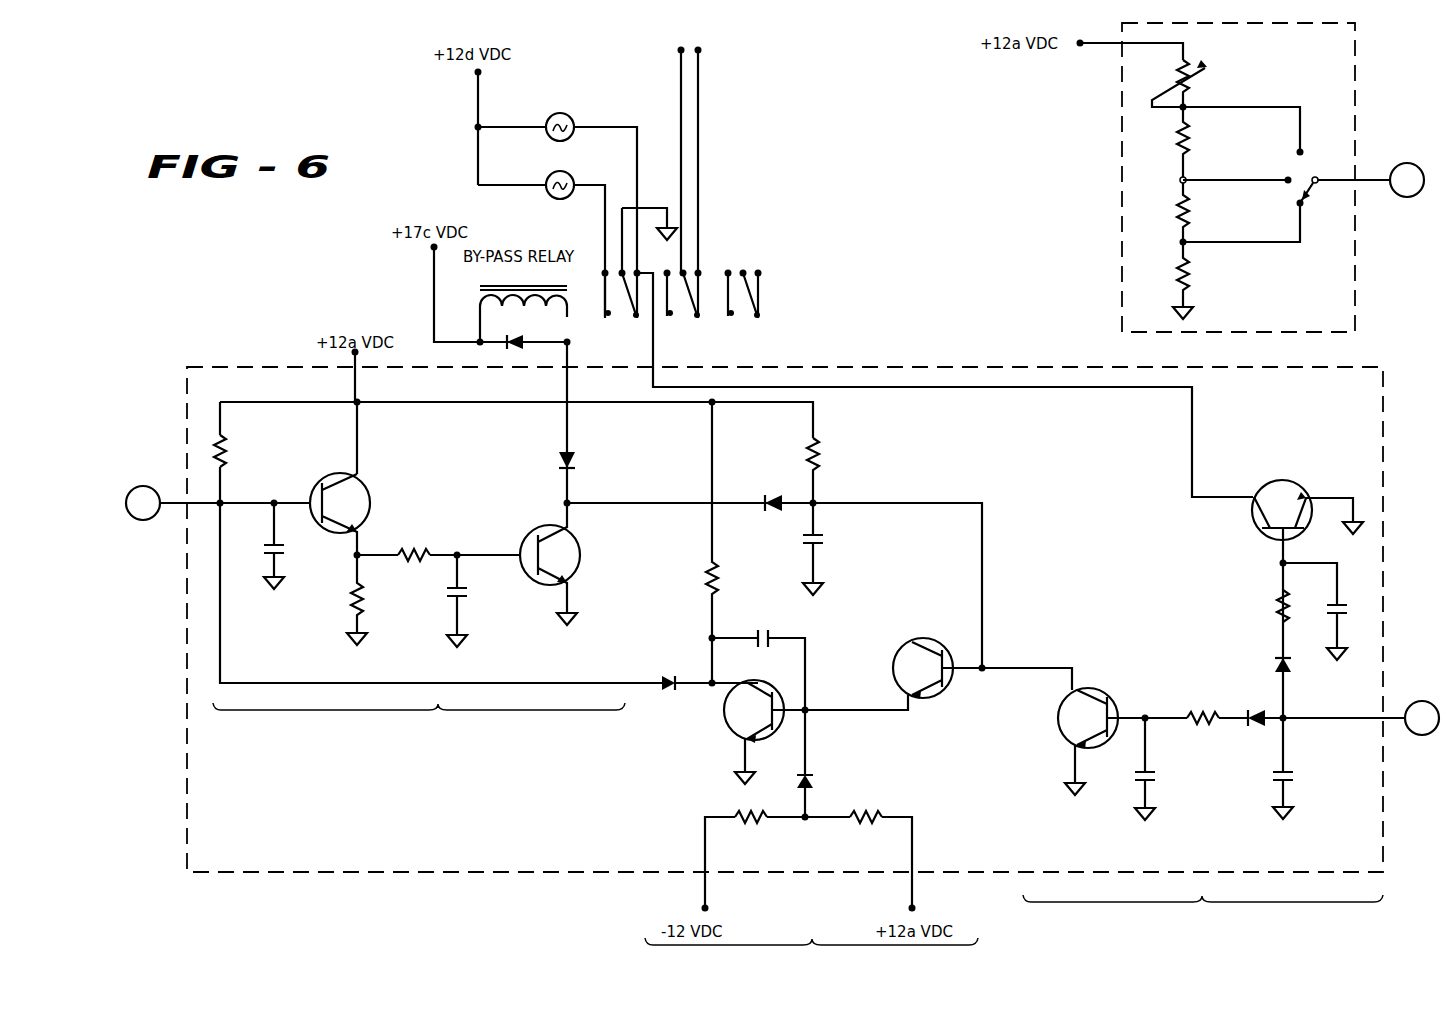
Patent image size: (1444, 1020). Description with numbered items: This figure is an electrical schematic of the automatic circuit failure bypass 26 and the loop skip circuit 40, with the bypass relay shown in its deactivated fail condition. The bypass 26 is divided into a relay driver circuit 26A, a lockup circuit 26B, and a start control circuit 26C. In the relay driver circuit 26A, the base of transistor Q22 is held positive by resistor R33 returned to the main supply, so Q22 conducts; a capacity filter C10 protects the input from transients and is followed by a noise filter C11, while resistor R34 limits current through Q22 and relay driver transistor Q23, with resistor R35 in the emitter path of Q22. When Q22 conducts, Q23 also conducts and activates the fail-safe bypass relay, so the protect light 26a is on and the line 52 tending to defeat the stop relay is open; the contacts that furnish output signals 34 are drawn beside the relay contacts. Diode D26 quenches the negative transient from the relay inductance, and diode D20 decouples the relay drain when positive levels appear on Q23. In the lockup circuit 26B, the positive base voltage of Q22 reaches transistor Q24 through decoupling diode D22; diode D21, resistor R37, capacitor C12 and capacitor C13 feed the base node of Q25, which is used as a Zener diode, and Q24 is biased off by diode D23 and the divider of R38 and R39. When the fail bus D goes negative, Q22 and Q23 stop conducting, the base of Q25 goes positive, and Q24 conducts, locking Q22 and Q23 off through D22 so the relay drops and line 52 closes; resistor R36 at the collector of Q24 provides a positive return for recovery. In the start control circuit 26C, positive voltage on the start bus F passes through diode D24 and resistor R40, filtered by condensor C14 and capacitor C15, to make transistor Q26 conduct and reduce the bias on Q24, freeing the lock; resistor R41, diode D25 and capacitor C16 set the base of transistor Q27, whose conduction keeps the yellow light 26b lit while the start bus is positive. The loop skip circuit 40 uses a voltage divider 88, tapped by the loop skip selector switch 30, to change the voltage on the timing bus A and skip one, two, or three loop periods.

The automatic circuit failure bypass 26 is at (213, 362).
The protect light 26a is at (549, 176).
The yellow light 26b is at (549, 118).
The belt stop circuit line 52 is at (702, 62).
The output signals 34 is at (770, 268).
The loop skip circuit 40 is at (1120, 190).
The voltage divider 88 is at (1142, 228).
The loop skip selector switch 30 is at (1323, 152).
The relay driver circuit 26A is at (419, 725).
The lockup circuit 26B is at (811, 959).
The start control circuit 26C is at (1203, 917).
The fail bus D is at (218, 503).
The timing bus A is at (1407, 180).
The start bus F is at (1422, 718).
The resistor R33 is at (239, 451).
The resistor R34 is at (414, 543).
The resistor R35 is at (375, 600).
The resistor R36 is at (731, 542).
The resistor R37 is at (832, 470).
The resistor R38 is at (751, 832).
The resistor R39 is at (866, 832).
The resistor R40 is at (1202, 707).
The resistor R41 is at (1262, 606).
The capacity filter C10 is at (257, 546).
The noise filter C11 is at (476, 601).
The capacitor C12 is at (830, 549).
The capacitor C13 is at (758, 693).
The condensor C14 is at (1162, 769).
The capacitor C15 is at (1302, 768).
The capacitor C16 is at (1326, 611).
The diode D20 is at (584, 459).
The diode D21 is at (773, 493).
The decoupling diode D22 is at (670, 673).
The diode D23 is at (823, 796).
The diode D24 is at (1254, 708).
The diode D25 is at (1300, 666).
The diode D26 is at (514, 352).
The transistor Q22 is at (367, 514).
The relay driver transistor Q23 is at (577, 564).
The transistor Q24 is at (735, 732).
The transistor Q25 is at (913, 668).
The transistor Q26 is at (1072, 741).
The transistor Q27 is at (1307, 495).